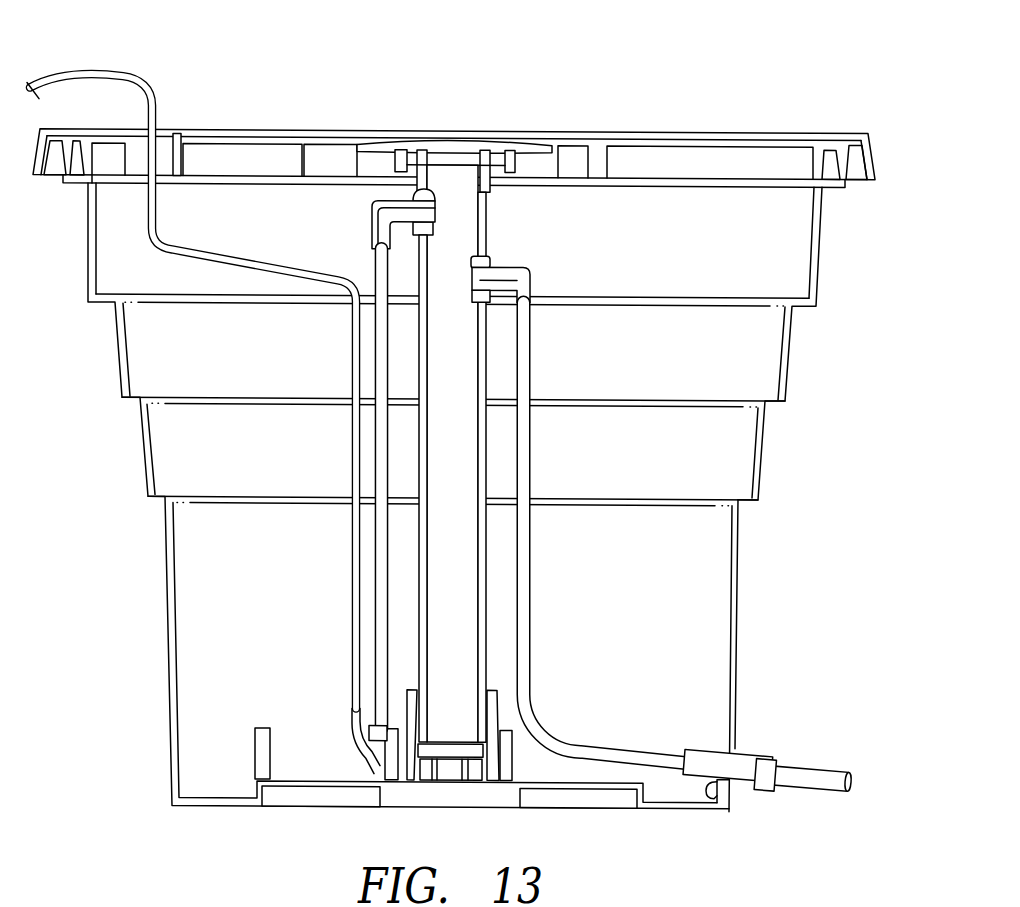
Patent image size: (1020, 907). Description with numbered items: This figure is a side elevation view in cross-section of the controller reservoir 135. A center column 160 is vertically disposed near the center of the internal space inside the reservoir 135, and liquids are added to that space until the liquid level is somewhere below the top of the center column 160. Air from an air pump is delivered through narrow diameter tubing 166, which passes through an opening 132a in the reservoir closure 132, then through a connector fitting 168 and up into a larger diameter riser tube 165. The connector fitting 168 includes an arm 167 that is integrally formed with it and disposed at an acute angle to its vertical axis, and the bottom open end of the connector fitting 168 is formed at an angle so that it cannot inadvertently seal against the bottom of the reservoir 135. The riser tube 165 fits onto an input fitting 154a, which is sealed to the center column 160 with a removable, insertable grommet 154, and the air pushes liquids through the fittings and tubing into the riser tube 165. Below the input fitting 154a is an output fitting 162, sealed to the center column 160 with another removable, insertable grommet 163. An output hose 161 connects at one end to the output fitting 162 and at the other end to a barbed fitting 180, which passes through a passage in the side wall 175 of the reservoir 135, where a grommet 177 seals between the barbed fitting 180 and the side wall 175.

The reservoir closure 132 is at (258, 131).
The opening 132a is at (180, 132).
The reservoir 135 is at (756, 536).
The grommet 154 is at (418, 193).
The input fitting 154a is at (372, 204).
The center column 160 is at (467, 181).
The output hose 161 is at (590, 744).
The output fitting 162 is at (530, 254).
The grommet 163 is at (474, 259).
The riser tube 165 is at (378, 569).
The narrow diameter tubing 166 is at (68, 73).
The arm 167 is at (353, 722).
The connector fitting 168 is at (373, 766).
The side wall 175 is at (738, 618).
The grommet 177 is at (713, 796).
The barbed fitting 180 is at (748, 741).